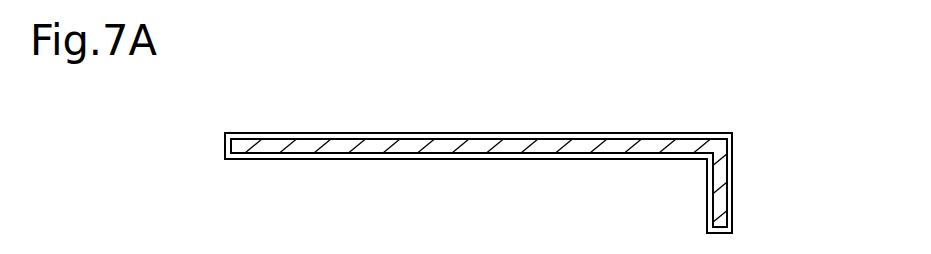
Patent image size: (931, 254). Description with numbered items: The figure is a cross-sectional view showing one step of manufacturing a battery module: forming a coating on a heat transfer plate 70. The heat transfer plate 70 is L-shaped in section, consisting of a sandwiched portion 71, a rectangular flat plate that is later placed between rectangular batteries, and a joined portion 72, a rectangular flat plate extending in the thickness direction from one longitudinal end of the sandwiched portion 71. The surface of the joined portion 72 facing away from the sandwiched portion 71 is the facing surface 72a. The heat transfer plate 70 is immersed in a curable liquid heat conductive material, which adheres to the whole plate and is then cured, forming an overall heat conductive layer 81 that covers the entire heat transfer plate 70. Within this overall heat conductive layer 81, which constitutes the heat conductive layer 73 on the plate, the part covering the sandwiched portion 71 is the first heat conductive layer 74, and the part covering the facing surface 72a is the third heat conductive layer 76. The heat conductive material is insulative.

The heat transfer plate 70 is at (513, 145).
The sandwiched portion 71 is at (443, 149).
The joined portion 72 is at (722, 178).
The facing surface 72a is at (727, 208).
The heat conductive layer 73 is at (565, 160).
The first heat conductive layer 74 is at (406, 134).
The third heat conductive layer 76 is at (735, 153).
The overall heat conductive layer 81 is at (617, 134).